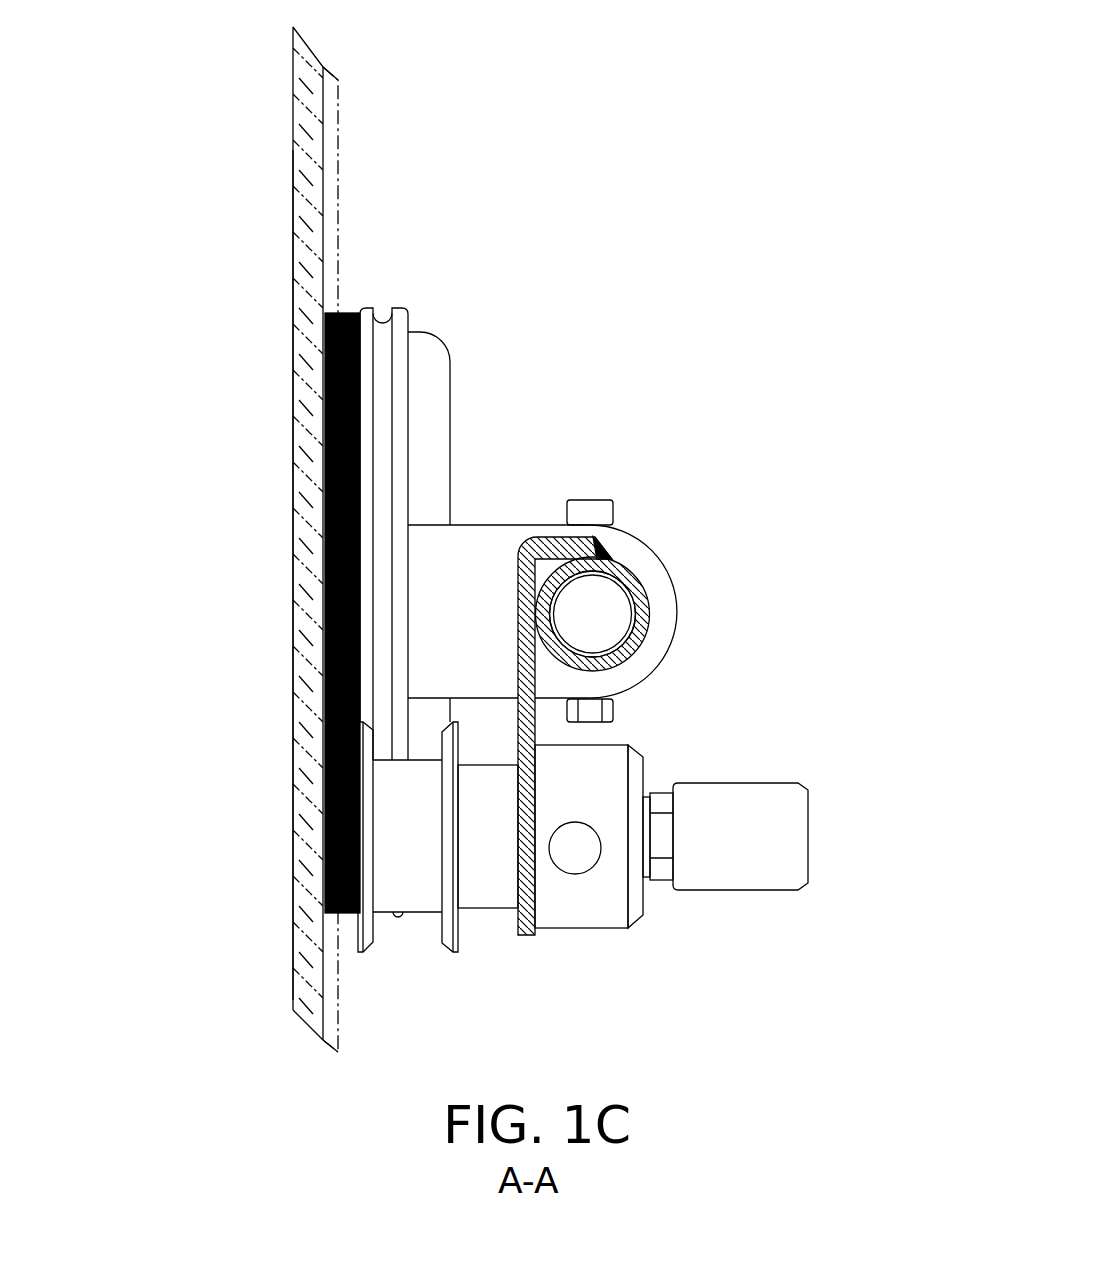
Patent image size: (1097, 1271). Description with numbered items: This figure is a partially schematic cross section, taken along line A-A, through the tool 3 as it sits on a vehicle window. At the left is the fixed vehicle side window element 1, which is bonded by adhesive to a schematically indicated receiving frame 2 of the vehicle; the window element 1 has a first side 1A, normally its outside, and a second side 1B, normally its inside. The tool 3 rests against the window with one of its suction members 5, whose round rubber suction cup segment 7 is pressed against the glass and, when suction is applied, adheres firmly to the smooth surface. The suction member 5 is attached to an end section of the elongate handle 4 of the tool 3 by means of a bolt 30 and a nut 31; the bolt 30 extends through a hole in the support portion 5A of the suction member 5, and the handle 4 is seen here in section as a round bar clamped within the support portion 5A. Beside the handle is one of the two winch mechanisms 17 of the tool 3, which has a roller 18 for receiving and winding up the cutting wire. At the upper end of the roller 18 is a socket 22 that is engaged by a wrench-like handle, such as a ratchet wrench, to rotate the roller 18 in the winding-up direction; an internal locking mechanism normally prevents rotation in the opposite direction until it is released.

The fixed vehicle side window element 1 is at (293, 145).
The first side of the window 1A is at (292, 343).
The second side of the window 1B is at (323, 140).
The receiving frame 2 is at (334, 228).
The tool 3 is at (503, 280).
The elongate handle 4 is at (645, 592).
The suction member 5 is at (495, 432).
The support portion 5A is at (660, 560).
The rubber suction cup segment 7 is at (327, 470).
The winch mechanism 17 is at (630, 928).
The roller 18 is at (408, 856).
The socket 22 is at (772, 830).
The bolt 30 is at (616, 506).
The nut 31 is at (593, 714).